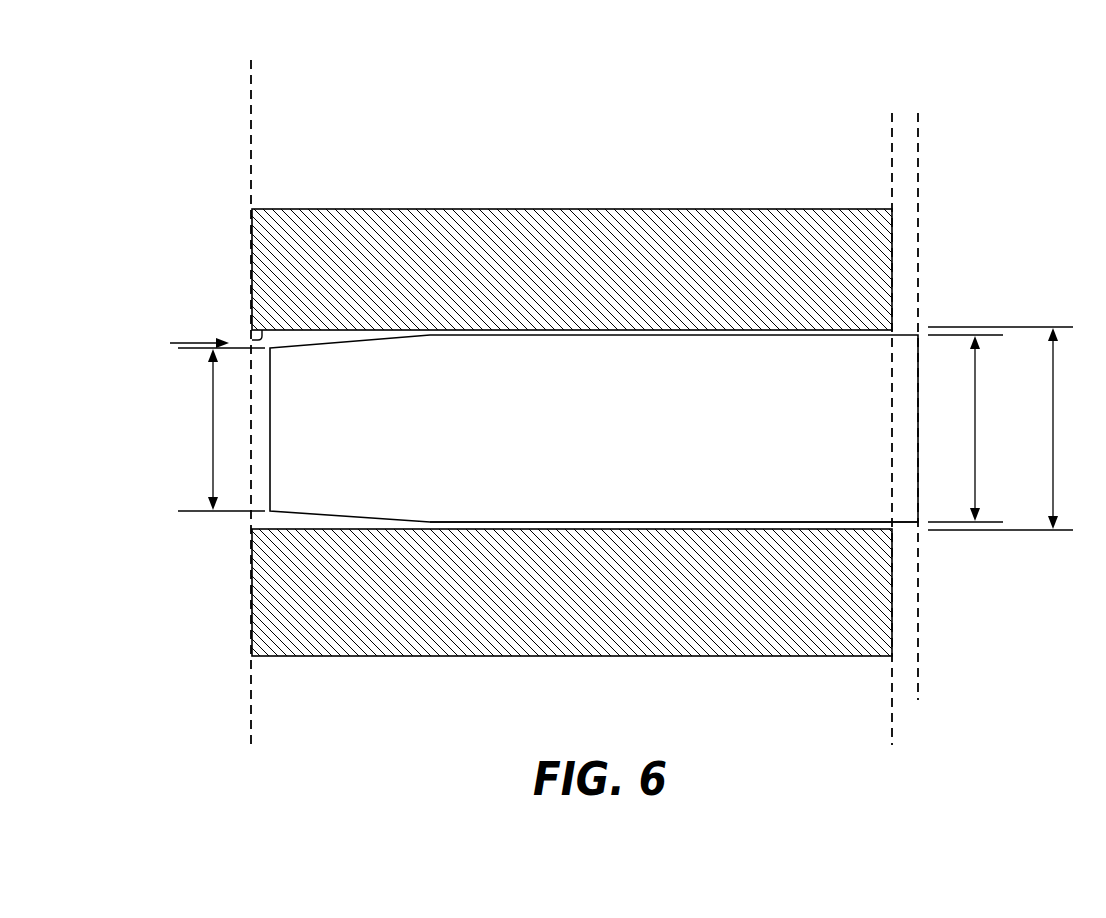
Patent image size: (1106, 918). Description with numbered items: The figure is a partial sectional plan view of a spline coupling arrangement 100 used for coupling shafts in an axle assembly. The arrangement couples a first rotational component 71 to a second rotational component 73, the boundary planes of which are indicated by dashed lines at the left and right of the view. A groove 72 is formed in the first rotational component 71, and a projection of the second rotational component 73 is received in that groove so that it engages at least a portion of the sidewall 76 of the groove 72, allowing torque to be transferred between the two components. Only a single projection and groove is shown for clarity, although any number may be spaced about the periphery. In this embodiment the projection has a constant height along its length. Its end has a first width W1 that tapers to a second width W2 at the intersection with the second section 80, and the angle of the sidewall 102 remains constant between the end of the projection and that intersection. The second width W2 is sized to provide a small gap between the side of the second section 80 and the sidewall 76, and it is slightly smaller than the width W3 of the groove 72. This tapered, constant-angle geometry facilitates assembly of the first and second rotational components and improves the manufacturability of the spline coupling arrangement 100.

The first rotational component 71 is at (249, 118).
The groove 72 is at (200, 343).
The second rotational component 73 is at (919, 175).
The sidewall 76 is at (249, 338).
The second section 80 is at (812, 523).
The spline coupling arrangement 100 is at (498, 163).
The sidewall 102 is at (290, 516).
The first width W1 is at (221, 429).
The second width W2 is at (965, 428).
The width of the groove W3 is at (1002, 428).